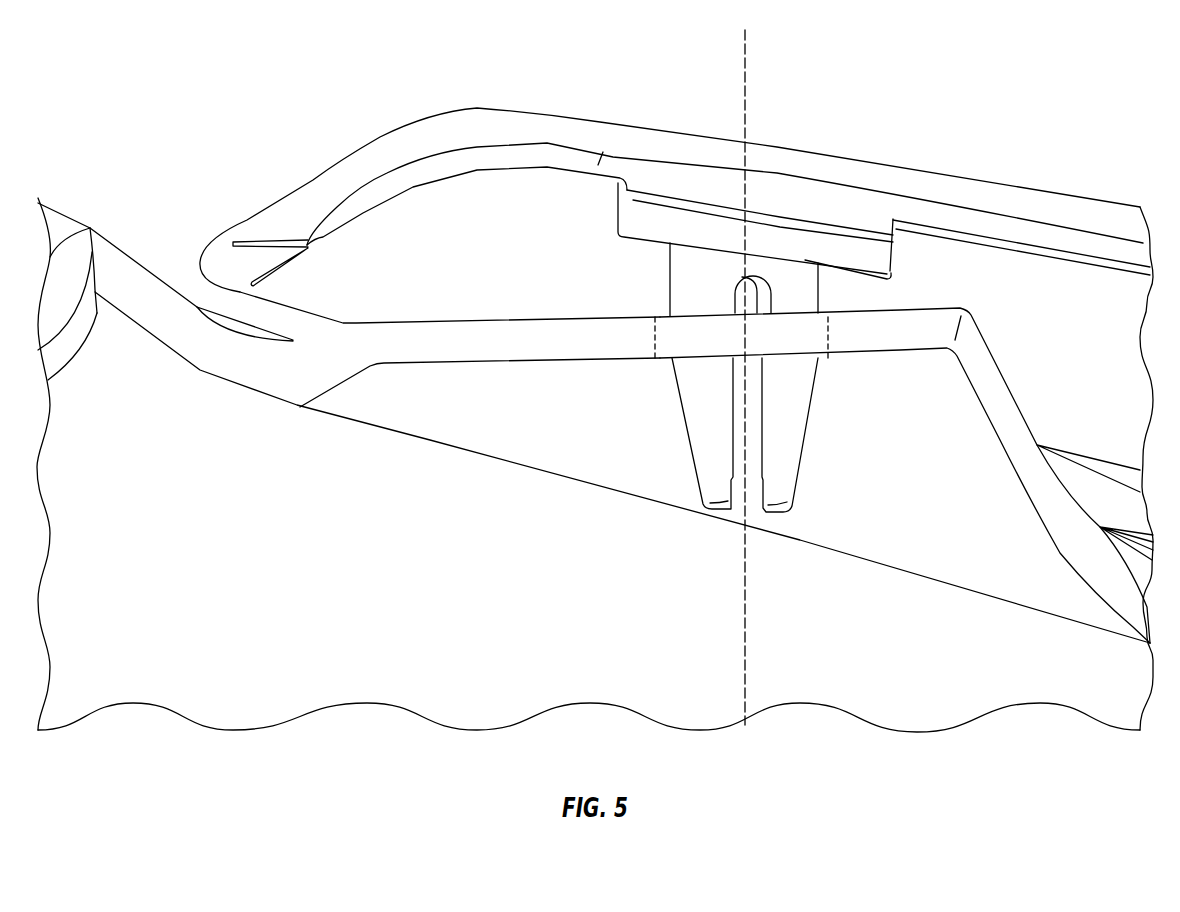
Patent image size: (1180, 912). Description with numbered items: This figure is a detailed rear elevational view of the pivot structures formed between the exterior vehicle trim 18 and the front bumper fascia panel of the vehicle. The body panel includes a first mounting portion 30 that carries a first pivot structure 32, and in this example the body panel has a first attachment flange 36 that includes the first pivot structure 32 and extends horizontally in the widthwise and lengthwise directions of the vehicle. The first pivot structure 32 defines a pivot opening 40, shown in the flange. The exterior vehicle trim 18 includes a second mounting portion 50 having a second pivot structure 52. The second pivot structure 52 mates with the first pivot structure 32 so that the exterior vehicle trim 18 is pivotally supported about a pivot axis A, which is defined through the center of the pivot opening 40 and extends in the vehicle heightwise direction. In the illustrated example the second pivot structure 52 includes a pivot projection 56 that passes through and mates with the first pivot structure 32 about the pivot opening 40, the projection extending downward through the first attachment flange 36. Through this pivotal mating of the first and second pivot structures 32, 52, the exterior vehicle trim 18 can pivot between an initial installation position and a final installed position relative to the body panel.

The exterior vehicle trim 18 is at (998, 180).
The first mounting portion 30 is at (125, 300).
The first pivot structure 32 is at (835, 355).
The first attachment flange 36 is at (455, 355).
The pivot opening 40 is at (655, 358).
The second mounting portion 50 is at (603, 212).
The second pivot structure 52 is at (890, 268).
The pivot projection 56 is at (802, 440).
The pivot axis A is at (745, 75).